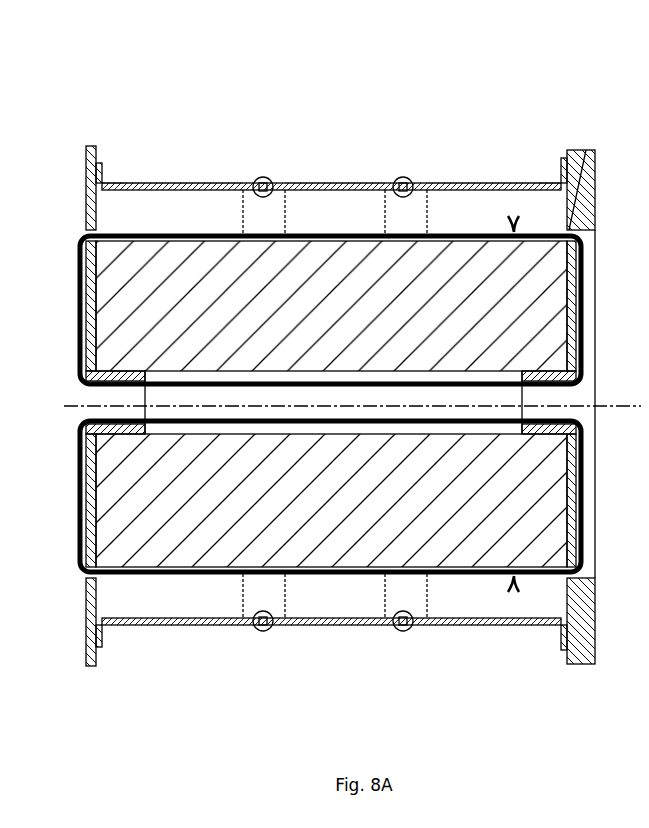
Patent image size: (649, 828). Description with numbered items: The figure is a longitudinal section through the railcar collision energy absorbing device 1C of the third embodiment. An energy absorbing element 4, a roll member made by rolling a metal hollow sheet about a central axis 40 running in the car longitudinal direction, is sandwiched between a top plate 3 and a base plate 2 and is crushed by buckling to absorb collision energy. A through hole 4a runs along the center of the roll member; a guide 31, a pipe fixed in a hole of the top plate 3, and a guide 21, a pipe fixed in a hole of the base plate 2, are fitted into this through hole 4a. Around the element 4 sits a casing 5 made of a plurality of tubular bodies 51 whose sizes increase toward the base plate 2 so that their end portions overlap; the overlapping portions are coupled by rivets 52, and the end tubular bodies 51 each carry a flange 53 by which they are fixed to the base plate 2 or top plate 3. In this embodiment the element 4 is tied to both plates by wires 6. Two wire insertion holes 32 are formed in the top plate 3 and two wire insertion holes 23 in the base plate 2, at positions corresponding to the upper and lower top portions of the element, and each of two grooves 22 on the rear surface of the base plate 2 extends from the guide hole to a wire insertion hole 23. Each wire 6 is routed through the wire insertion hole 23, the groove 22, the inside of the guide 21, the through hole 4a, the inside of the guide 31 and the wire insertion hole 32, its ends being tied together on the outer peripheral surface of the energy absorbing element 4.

The railcar collision energy absorbing device 1C is at (157, 163).
The base plate 2 is at (584, 399).
The top plate 3 is at (105, 425).
The energy absorbing element 4 is at (189, 541).
The through hole 4a is at (392, 441).
The casing 5 is at (328, 336).
The wire 6 is at (441, 226).
The guide 21 is at (527, 426).
The groove 22 is at (571, 284).
The wire insertion hole 23 is at (578, 141).
The guide 31 is at (102, 431).
The wire insertion hole 32 is at (70, 214).
The central axis 40 is at (318, 399).
The tubular body 51 is at (189, 176).
The rivet 52 is at (255, 169).
The flange 53 is at (95, 174).